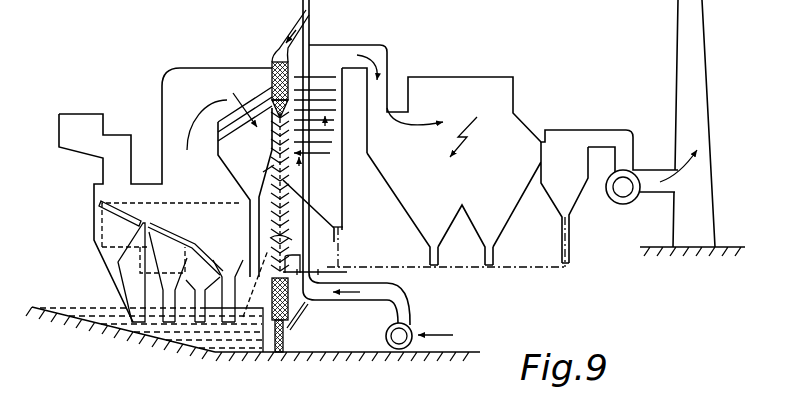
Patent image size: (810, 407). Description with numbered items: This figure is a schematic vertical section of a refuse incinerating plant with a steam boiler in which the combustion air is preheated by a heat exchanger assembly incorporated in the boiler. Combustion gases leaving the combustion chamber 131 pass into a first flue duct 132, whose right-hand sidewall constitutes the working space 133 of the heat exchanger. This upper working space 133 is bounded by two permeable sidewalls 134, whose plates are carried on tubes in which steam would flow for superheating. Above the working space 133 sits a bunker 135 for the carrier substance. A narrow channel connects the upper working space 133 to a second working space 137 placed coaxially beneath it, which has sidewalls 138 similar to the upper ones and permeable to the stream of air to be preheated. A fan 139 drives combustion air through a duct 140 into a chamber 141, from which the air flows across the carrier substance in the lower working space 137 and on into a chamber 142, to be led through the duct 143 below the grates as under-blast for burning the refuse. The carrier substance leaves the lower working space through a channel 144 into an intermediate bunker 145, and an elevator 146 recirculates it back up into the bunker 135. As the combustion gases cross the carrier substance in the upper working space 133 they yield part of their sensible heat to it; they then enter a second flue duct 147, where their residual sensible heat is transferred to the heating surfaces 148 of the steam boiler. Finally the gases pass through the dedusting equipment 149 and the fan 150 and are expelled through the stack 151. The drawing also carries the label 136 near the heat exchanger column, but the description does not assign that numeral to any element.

The combustion chamber 131 is at (223, 188).
The first flue duct 132 is at (245, 124).
The working space 133 is at (255, 175).
The permeable sidewalls 134 is at (228, 104).
The bunker 135 is at (271, 62).
The baffle cascade column 136 is at (283, 192).
The second working space 137 is at (318, 212).
The sidewalls 138 is at (268, 228).
The fan 139 is at (407, 324).
The duct 140 is at (387, 290).
The chamber 141 is at (295, 245).
The chamber 142 is at (263, 240).
The duct 143 is at (155, 215).
The channel 144 is at (327, 268).
The intermediate bunker 145 is at (288, 308).
The elevator 146 is at (310, 175).
The second flue duct 147 is at (380, 143).
The heating surfaces 148 is at (316, 156).
The dedusting equipment 149 is at (577, 147).
The fan 150 is at (620, 204).
The stack 151 is at (693, 60).